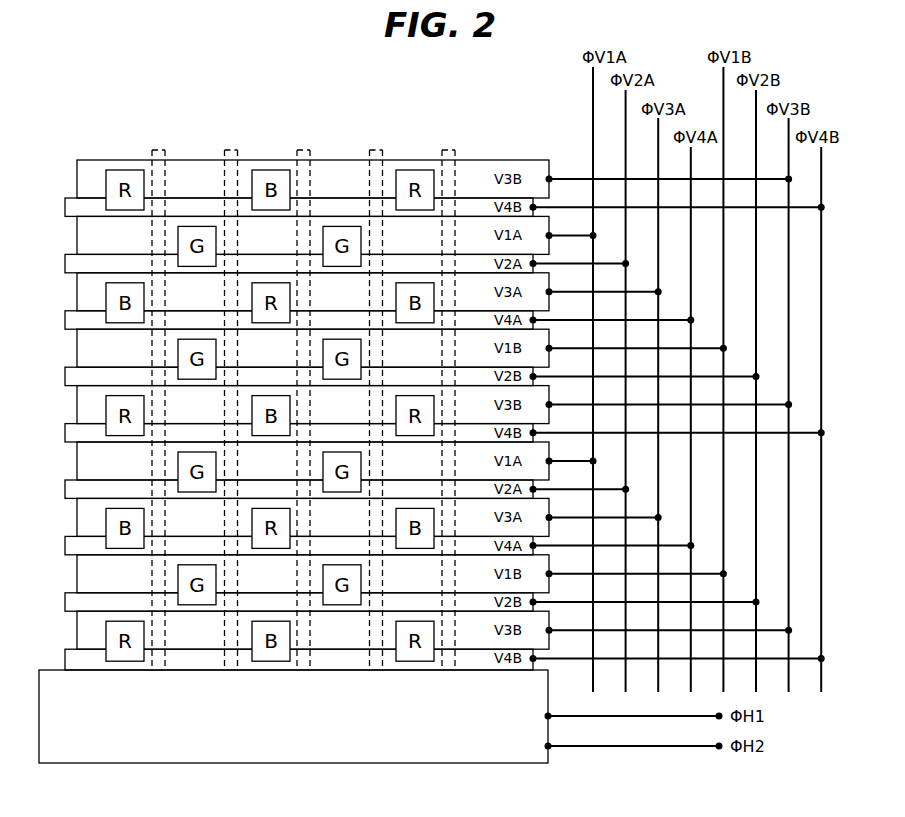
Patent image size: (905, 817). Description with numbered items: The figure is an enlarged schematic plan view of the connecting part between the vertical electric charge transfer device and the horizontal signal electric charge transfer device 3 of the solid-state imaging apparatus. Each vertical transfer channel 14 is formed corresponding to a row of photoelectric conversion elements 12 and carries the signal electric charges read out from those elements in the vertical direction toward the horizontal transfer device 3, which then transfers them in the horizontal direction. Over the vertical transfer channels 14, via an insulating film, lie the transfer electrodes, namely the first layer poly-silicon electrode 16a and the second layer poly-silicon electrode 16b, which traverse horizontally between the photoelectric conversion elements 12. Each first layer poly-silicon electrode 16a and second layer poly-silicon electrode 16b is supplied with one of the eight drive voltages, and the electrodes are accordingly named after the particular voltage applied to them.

The horizontal signal electric charge transfer device 3 is at (72, 750).
The photoelectric conversion element 12 is at (150, 177).
The vertical transfer channel 14 is at (228, 152).
The first layer poly-silicon electrode 16a is at (72, 254).
The second layer poly-silicon electrode 16b is at (92, 246).